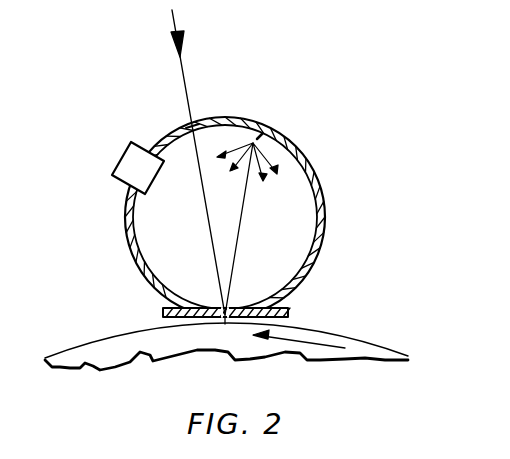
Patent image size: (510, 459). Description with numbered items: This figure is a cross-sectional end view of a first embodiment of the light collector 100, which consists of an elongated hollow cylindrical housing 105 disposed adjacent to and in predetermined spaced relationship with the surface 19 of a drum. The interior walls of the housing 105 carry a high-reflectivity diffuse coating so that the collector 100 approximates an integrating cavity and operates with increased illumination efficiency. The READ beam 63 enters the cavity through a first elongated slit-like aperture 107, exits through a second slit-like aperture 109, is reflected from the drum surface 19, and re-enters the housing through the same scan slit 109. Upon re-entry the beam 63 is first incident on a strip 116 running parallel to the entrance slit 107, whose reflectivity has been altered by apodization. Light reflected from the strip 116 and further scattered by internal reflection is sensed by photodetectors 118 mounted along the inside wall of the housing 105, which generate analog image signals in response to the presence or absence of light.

The collector 100 is at (350, 148).
The housing 105 is at (323, 270).
The first elongated slit-like aperture 107 is at (197, 126).
The second slit-like aperture 109 is at (232, 300).
The strip 116 is at (262, 134).
The photodetectors 118 is at (128, 152).
The READ beam 63 is at (183, 66).
The surface of drum 19 is at (373, 350).